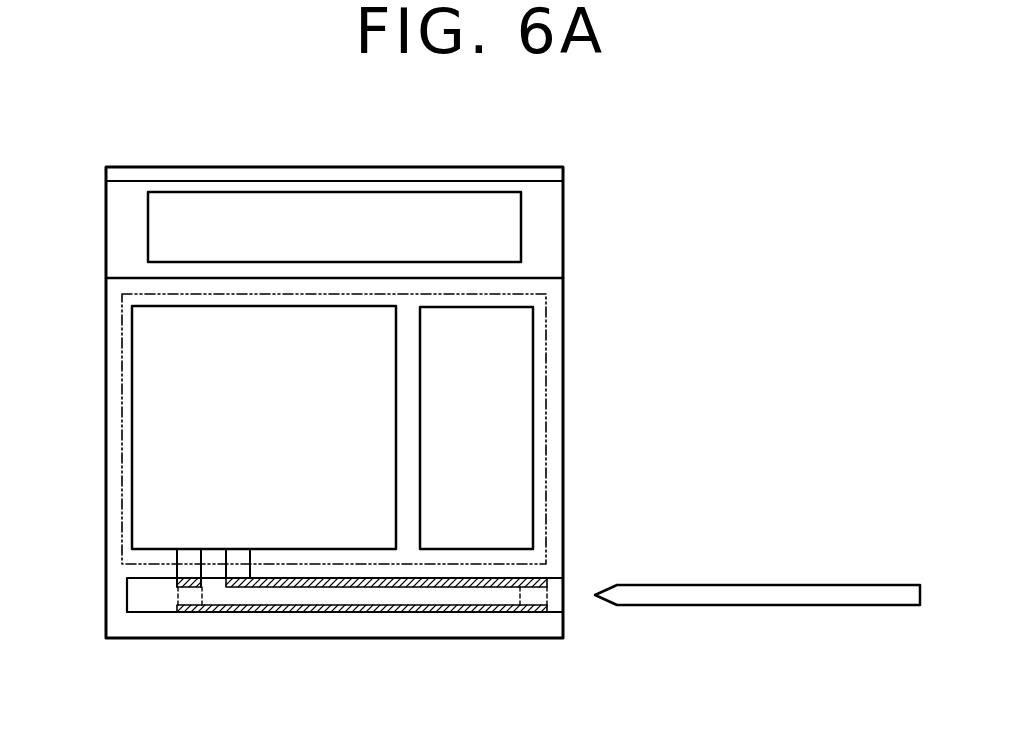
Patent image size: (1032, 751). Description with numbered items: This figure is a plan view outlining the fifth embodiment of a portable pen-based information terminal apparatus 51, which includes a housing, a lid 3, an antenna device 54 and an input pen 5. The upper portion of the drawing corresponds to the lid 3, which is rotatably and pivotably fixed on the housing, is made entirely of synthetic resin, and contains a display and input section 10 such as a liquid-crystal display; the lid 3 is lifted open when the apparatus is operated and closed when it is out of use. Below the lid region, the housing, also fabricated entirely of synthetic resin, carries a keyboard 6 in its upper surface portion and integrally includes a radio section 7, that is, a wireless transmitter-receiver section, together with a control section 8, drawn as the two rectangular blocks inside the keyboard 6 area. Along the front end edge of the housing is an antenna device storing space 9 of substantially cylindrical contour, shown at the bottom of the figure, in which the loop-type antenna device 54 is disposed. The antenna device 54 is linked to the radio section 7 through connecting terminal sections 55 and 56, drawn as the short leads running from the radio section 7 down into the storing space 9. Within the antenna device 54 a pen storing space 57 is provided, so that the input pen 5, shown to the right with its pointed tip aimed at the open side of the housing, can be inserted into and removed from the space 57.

The portable pen-based information terminal apparatus 51 is at (738, 287).
The lid 3 is at (131, 196).
The display and input section 10 is at (415, 212).
The keyboard 6 is at (547, 366).
The radio section 7 is at (148, 437).
The control section 8 is at (525, 420).
The input pen 5 is at (733, 598).
The antenna device 54 is at (386, 610).
The connecting terminal section 55 is at (182, 570).
The connecting terminal section 56 is at (238, 573).
The pen storing space 57 is at (477, 598).
The antenna device storing space 9 is at (317, 598).